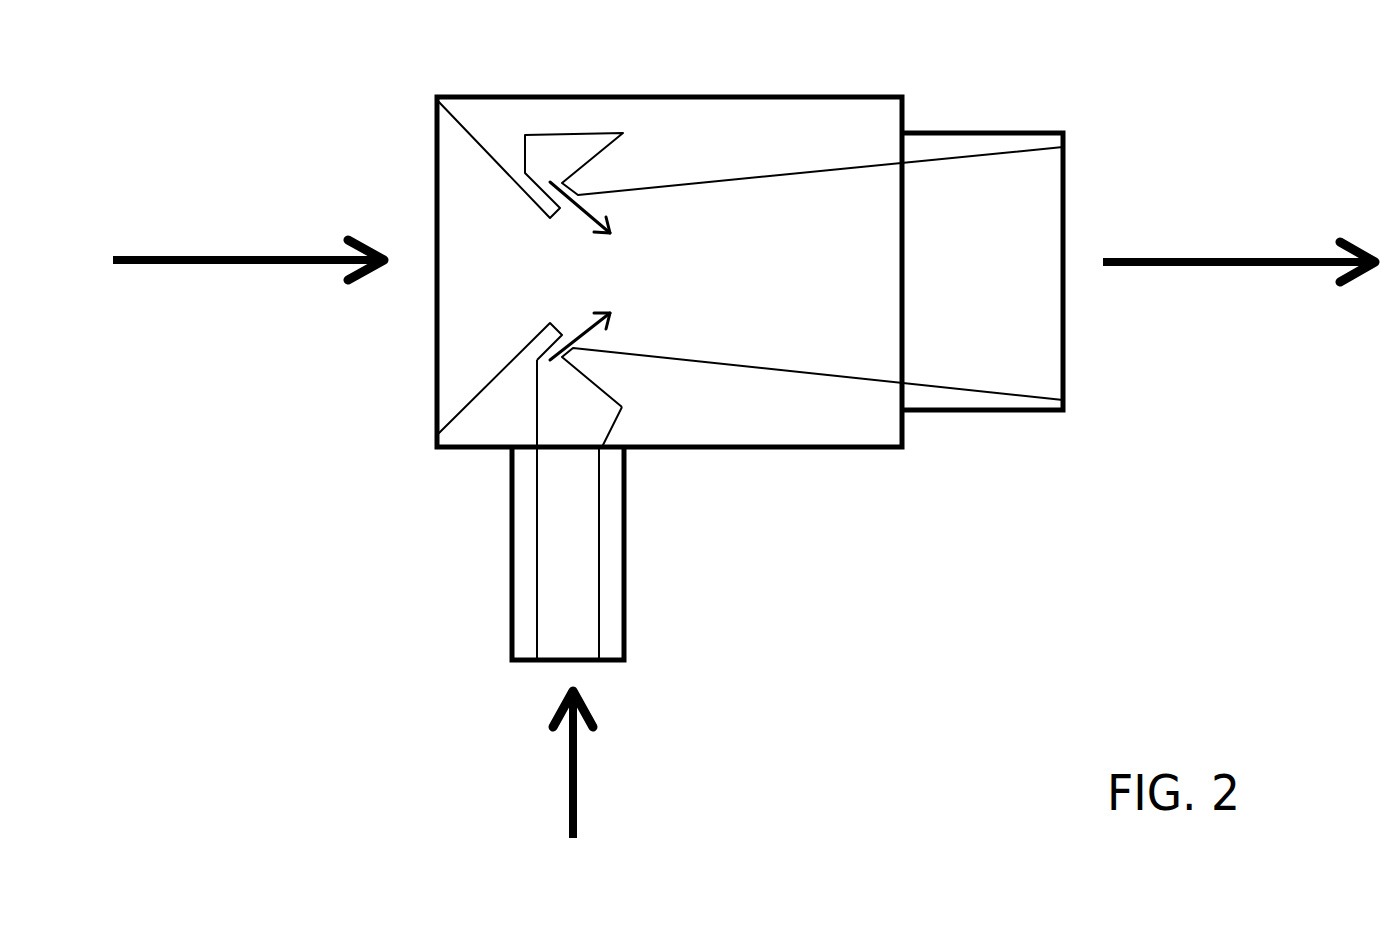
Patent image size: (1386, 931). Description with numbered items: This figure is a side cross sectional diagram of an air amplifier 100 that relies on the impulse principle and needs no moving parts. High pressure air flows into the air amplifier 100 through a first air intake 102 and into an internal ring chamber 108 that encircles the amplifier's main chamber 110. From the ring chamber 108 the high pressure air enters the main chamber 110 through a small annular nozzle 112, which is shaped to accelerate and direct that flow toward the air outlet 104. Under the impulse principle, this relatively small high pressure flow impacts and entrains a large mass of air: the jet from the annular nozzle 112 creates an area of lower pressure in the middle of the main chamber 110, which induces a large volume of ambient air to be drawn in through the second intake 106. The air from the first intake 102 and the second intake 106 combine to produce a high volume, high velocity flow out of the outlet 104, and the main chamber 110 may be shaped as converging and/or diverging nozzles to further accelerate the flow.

The air amplifier 100 is at (744, 467).
The first air intake 102 is at (512, 598).
The air outlet 104 is at (1067, 385).
The second intake 106 is at (437, 398).
The internal ring chamber 108 is at (595, 133).
The main chamber 110 is at (667, 239).
The annular nozzle 112 is at (565, 343).